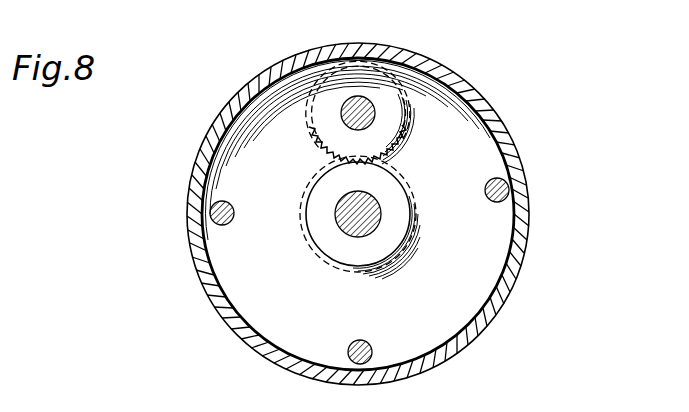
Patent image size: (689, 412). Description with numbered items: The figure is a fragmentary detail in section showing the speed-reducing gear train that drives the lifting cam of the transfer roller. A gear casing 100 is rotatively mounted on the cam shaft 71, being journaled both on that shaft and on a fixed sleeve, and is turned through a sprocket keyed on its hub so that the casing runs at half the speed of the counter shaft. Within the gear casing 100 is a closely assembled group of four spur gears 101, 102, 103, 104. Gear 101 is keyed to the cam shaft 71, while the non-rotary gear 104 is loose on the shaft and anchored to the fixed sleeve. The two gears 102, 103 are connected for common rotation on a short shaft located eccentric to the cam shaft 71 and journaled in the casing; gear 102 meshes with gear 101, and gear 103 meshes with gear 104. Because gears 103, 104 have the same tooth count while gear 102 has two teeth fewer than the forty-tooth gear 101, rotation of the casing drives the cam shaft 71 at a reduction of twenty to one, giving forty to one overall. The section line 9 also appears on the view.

The section line 9- 9 is at (358, 405).
The cam shaft 71 is at (381, 223).
The gear casing 100 is at (526, 264).
The gear 101 is at (386, 208).
The gear 102 is at (389, 126).
The gear 103 is at (410, 152).
The non-rotary gear 104 is at (416, 264).